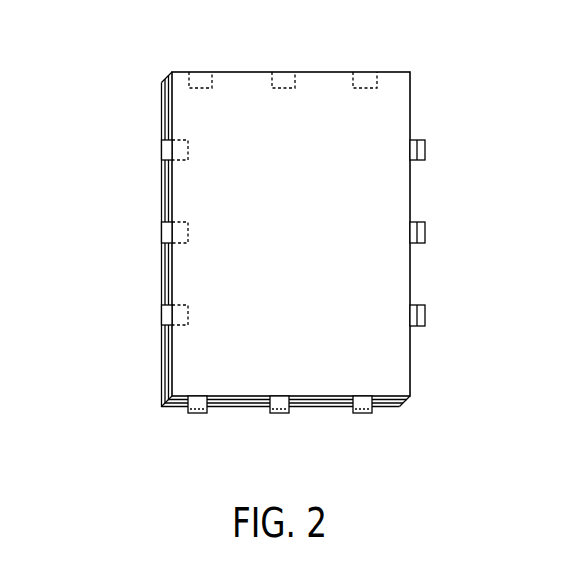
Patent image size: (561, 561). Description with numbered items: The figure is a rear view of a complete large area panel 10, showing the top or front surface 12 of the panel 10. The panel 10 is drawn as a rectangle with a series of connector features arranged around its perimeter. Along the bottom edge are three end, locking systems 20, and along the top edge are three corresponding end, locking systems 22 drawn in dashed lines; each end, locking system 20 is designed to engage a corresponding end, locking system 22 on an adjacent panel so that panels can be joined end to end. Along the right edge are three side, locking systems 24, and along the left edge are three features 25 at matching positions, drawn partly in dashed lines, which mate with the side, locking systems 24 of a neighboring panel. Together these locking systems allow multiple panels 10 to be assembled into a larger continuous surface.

The large area panel 10 is at (82, 71).
The top surface 12 is at (300, 246).
The end, locking system 20 is at (199, 414).
The end, locking system 22 is at (199, 72).
The side, locking system 24 is at (420, 148).
The left side connector slots 25 is at (167, 150).